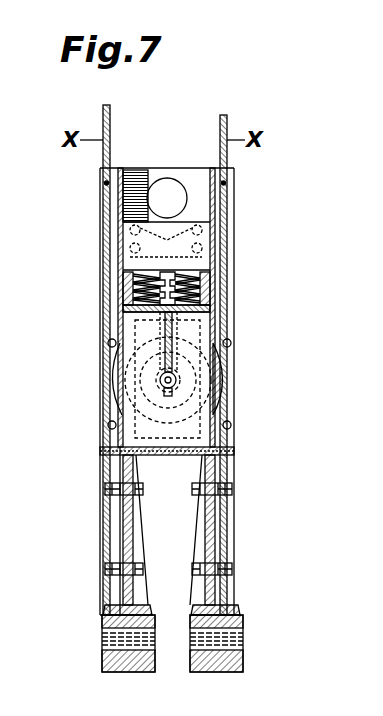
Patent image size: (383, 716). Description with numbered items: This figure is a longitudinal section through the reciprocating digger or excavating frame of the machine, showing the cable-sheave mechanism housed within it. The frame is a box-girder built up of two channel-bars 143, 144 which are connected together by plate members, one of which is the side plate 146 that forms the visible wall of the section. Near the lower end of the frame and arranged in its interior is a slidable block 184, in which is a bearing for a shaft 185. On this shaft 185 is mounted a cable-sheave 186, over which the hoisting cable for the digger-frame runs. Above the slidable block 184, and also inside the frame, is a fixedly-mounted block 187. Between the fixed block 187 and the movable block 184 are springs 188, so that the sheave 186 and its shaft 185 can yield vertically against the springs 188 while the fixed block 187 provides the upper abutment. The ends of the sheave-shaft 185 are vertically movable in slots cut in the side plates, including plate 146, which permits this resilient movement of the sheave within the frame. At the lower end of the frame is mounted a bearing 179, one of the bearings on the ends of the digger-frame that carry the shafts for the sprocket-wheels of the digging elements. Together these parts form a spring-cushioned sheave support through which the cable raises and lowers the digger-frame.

The channel-bar 143 is at (118, 193).
The channel-bar 144 is at (215, 203).
The plate member 146 is at (157, 163).
The fixedly-mounted block 187 is at (187, 242).
The springs 188 is at (210, 288).
The cable-sheave 186 is at (222, 382).
The shaft 185 is at (163, 380).
The slidable block 184 is at (148, 402).
The bearing 179 is at (195, 690).